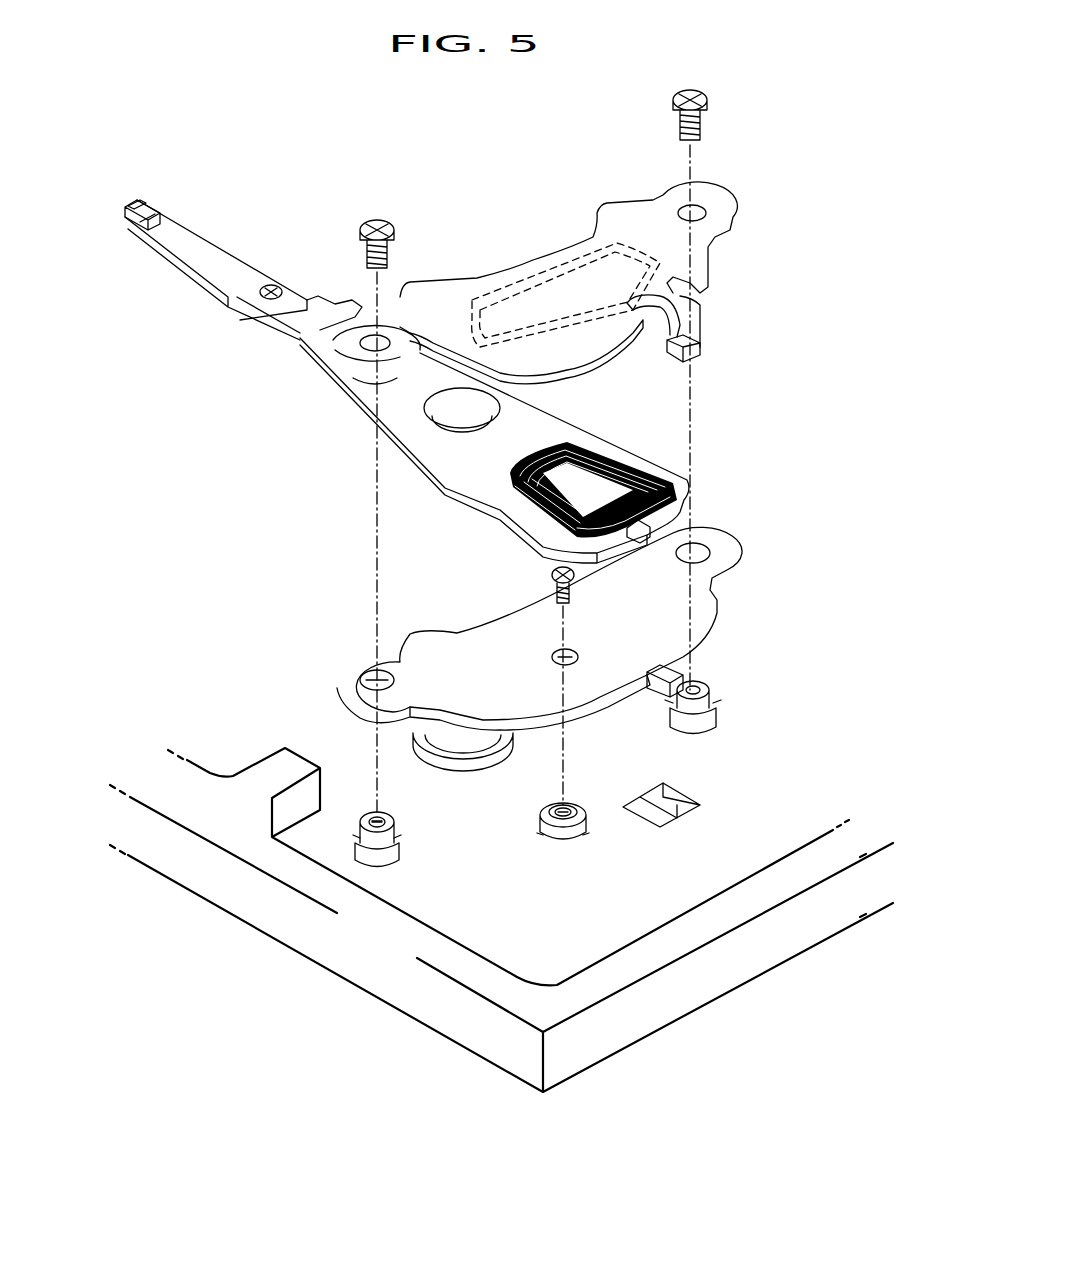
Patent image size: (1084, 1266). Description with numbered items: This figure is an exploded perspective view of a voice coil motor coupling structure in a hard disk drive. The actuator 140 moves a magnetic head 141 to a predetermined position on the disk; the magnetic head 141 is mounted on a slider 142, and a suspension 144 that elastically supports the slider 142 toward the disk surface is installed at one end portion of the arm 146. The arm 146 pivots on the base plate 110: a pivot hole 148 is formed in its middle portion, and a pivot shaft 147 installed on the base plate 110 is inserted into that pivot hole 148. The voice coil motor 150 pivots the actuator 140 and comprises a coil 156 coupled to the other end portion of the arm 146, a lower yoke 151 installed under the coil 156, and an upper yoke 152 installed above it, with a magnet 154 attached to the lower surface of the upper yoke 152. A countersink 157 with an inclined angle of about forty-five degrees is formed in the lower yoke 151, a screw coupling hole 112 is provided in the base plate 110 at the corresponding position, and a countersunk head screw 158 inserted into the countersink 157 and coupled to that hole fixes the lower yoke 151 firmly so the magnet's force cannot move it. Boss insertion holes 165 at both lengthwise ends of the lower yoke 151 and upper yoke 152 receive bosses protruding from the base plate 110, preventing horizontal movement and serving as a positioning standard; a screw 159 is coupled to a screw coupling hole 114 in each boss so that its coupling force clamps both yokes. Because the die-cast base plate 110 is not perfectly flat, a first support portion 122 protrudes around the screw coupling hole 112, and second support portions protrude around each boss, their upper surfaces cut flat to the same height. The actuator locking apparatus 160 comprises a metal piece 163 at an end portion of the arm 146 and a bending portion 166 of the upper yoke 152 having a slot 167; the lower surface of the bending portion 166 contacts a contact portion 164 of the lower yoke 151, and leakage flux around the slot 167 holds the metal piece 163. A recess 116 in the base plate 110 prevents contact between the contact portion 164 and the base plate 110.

The base plate 110 is at (433, 1007).
The screw coupling hole 112 is at (563, 810).
The screw coupling hole 114 is at (373, 817).
The recess 116 is at (673, 792).
The first support portion 122 is at (567, 830).
The actuator 140 is at (296, 376).
The magnetic head 141 is at (137, 200).
The slider 142 is at (153, 217).
The suspension 144 is at (250, 273).
The arm 146 is at (313, 320).
The pivot shaft 147 is at (473, 740).
The pivot hole 148 is at (460, 423).
The voice coil motor 150 is at (777, 270).
The lower yoke 151 is at (457, 650).
The upper yoke 152 is at (440, 297).
The magnet 154 is at (513, 295).
The coil 156 is at (637, 467).
The countersink 157 is at (570, 652).
The countersunk head screw 158 is at (553, 578).
The screw 159 is at (377, 220).
The actuator locking apparatus 160 is at (800, 340).
The metal piece 163 is at (692, 473).
The contact portion 164 is at (648, 700).
The boss insertion hole 165 is at (370, 677).
The bending portion 166 is at (697, 312).
The slot 167 is at (700, 347).